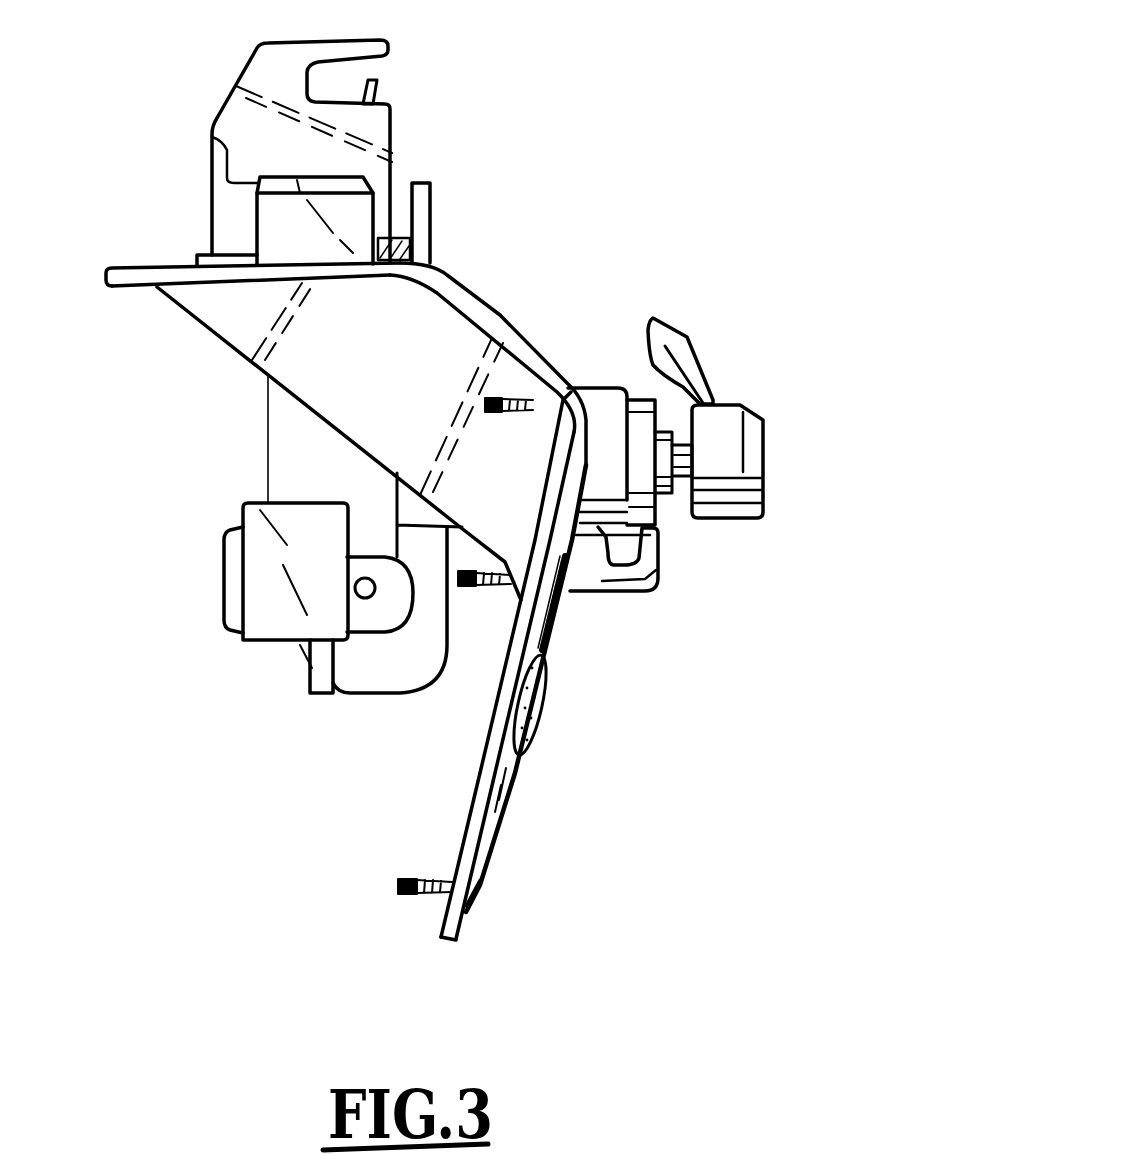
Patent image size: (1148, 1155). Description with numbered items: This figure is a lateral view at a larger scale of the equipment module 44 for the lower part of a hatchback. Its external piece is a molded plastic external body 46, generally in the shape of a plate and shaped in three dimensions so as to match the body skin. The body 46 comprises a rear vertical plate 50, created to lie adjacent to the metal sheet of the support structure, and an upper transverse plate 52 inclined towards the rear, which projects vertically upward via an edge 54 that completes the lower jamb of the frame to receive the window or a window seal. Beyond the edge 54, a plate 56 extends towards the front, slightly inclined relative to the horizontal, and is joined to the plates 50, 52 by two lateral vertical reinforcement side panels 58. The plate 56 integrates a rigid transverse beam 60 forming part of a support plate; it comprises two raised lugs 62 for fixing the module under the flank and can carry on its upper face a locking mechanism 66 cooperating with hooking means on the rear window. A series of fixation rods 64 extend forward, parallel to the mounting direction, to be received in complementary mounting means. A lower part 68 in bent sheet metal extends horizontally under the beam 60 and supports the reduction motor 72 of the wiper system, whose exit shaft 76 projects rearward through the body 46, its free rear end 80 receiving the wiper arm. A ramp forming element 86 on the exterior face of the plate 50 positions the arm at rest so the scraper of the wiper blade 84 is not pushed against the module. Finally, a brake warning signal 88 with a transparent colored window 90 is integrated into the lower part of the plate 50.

The equipment module 44 is at (755, 433).
The external body 46 is at (483, 885).
The rear vertical plate 50 is at (508, 800).
The upper transverse plate 52 is at (497, 303).
The edge 54 is at (430, 200).
The plate 56 is at (224, 278).
The lateral vertical reinforcement side panels 58 is at (313, 370).
The transverse beam 60 is at (393, 191).
The raised lugs 62 is at (212, 137).
The fixation rods 64 is at (507, 413).
The locking mechanism 66 is at (380, 96).
The lower part 68 is at (392, 251).
The reduction motor 72 is at (280, 568).
The exit shaft 76 is at (772, 447).
The free rear end 80 is at (676, 485).
The wiper blade 84 is at (706, 333).
The ramp forming element 86 is at (638, 604).
The brake warning signal 88 is at (542, 706).
The transparent colored window 90 is at (528, 719).